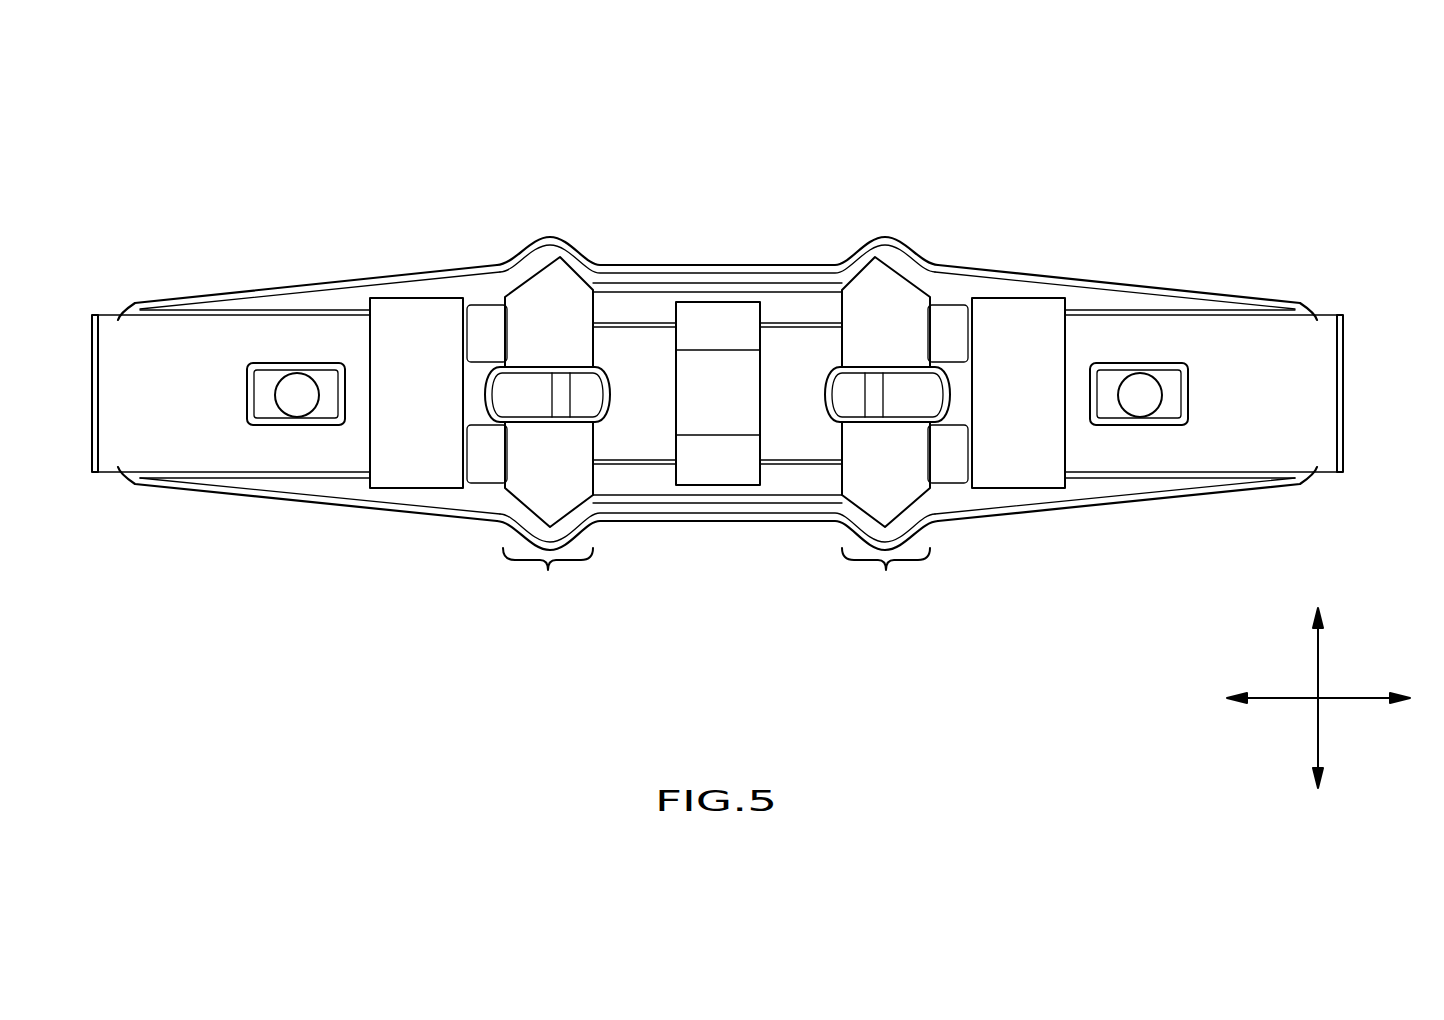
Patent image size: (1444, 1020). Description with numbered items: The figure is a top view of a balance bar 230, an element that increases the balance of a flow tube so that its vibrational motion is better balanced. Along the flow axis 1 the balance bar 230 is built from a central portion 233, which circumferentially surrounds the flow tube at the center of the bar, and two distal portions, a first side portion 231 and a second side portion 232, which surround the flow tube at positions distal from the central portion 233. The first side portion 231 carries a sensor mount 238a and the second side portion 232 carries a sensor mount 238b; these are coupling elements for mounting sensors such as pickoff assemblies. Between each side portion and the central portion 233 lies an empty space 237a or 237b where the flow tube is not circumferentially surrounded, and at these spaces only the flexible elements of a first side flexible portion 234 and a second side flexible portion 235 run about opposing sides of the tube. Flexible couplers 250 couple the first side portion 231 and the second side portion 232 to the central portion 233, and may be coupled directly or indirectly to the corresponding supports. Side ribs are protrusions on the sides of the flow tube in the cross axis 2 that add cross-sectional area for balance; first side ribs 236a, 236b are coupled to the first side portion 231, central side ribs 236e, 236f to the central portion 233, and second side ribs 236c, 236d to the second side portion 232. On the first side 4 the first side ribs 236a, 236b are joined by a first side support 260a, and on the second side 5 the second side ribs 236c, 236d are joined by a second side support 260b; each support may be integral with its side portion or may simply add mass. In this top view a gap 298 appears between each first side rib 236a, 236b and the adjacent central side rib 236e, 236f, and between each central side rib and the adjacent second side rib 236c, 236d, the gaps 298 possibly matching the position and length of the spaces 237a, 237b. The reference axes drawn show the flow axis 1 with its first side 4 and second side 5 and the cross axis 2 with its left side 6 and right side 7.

The balance bar 230 is at (1140, 134).
The first side portion 231 is at (487, 325).
The second side portion 232 is at (1125, 345).
The central portion 233 is at (812, 345).
The first side flexible portion 234 is at (548, 578).
The second side flexible portion 235 is at (886, 578).
The first side rib 236a is at (285, 493).
The first side rib 236b is at (305, 298).
The second side rib 236c is at (1155, 490).
The second side rib 236d is at (1115, 295).
The central side rib 236e is at (745, 505).
The central side rib 236f is at (752, 273).
The space 237a is at (555, 313).
The space 237b is at (905, 340).
The sensor mount 238a is at (290, 392).
The sensor mount 238b is at (1148, 393).
The flexible coupler 250 is at (538, 238).
The first side support 260a is at (410, 325).
The second side support 260b is at (1010, 320).
The gap 298 is at (535, 283).
The flow axis 1 is at (1280, 699).
The cross axis 2 is at (1320, 668).
The first side 4 is at (1232, 697).
The second side 5 is at (1404, 697).
The left side 6 is at (1314, 623).
The right side 7 is at (1321, 773).